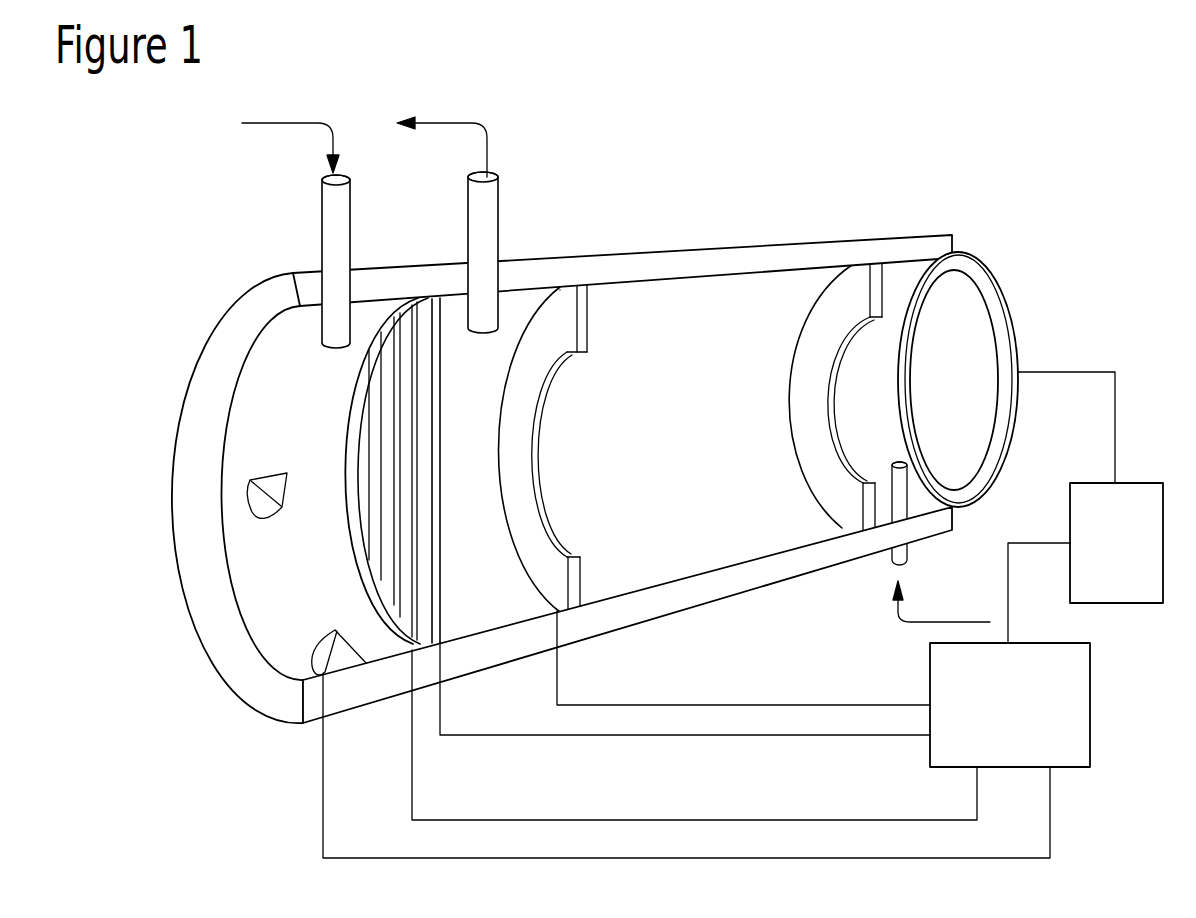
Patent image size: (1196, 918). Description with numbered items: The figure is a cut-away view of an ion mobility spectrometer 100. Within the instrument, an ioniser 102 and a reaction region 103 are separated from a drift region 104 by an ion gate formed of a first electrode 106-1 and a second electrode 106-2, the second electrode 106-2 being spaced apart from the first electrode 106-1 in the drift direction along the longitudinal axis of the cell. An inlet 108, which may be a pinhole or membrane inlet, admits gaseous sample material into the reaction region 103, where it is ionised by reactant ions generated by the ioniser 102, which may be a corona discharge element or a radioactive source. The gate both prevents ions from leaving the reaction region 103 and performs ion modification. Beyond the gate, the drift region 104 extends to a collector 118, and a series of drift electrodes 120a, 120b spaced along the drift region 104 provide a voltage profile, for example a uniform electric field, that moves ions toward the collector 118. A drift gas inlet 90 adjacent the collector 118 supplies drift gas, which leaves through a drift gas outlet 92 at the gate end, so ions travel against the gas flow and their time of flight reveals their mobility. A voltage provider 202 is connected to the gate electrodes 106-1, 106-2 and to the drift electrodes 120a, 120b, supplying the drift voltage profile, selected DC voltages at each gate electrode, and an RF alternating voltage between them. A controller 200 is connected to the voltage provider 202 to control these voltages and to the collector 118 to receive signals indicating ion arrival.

The ion mobility spectrometer 100 is at (176, 289).
The ioniser 102 is at (343, 662).
The reaction region 103 is at (326, 432).
The drift region 104 is at (701, 433).
The first electrode 106-1 is at (477, 615).
The second electrode 106-2 is at (353, 572).
The inlet 108 is at (329, 222).
The drift gas outlet 92 is at (490, 197).
The drift gas inlet 90 is at (908, 556).
The collector 118 is at (967, 302).
The drift electrode 120a is at (570, 287).
The drift electrode 120b is at (860, 283).
The controller 200 is at (1139, 537).
The voltage provider 202 is at (1032, 702).